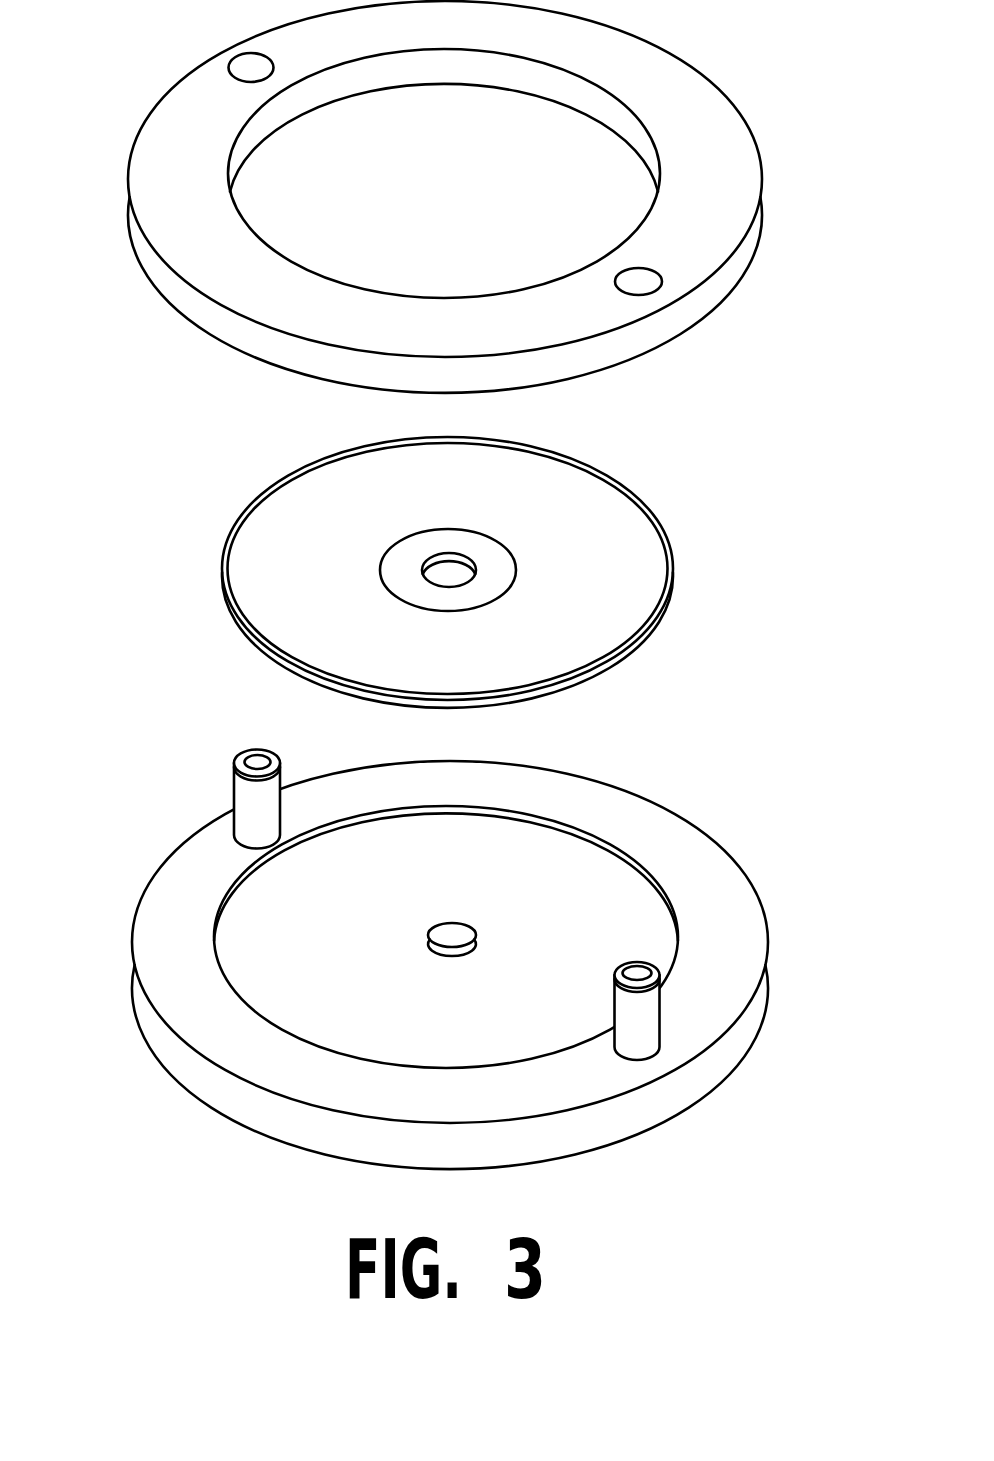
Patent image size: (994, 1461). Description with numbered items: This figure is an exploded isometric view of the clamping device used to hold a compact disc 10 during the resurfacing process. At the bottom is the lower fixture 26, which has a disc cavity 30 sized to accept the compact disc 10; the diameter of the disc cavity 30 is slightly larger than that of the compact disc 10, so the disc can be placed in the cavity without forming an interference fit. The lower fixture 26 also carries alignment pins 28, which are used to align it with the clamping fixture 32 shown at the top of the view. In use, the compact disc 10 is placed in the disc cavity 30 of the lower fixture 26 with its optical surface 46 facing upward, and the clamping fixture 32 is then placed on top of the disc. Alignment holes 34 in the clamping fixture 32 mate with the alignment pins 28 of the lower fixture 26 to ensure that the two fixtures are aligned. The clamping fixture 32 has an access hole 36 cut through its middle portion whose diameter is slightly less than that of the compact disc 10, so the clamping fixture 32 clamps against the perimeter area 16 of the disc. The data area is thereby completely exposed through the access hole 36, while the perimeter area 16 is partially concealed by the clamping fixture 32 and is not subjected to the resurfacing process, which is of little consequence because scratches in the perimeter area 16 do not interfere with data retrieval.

The compact disc 10 is at (223, 593).
The perimeter area 16 is at (673, 547).
The optical surface 46 is at (573, 530).
The clamping fixture 32 is at (175, 284).
The alignment holes 34 is at (640, 286).
The access hole 36 is at (277, 117).
The lower fixture 26 is at (692, 1077).
The alignment pins 28 is at (240, 785).
The disc cavity 30 is at (613, 920).